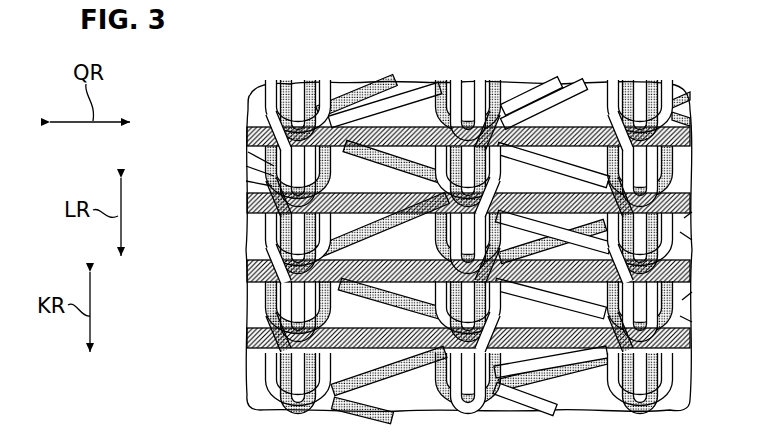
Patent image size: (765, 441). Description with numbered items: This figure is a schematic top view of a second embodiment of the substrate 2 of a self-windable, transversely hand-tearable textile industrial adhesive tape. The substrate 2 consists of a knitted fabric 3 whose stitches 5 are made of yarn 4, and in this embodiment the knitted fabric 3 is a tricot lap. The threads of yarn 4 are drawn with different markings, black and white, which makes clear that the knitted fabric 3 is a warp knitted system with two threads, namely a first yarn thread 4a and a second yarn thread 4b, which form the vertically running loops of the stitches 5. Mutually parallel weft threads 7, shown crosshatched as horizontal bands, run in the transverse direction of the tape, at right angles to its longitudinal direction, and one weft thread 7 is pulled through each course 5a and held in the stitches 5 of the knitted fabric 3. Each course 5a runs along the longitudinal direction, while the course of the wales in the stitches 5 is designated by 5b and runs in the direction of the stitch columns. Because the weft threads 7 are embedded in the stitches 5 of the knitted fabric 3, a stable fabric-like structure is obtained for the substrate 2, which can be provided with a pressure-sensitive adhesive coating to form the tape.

The substrate 2 is at (235, 250).
The knitted fabric 3 is at (175, 382).
The yarn 4 is at (369, 78).
The first yarn thread 4a is at (258, 110).
The second yarn thread 4b is at (256, 172).
The stitches 5 is at (537, 216).
The course 5a is at (236, 273).
The course of wales 5b is at (298, 70).
The weft threads 7 is at (409, 133).